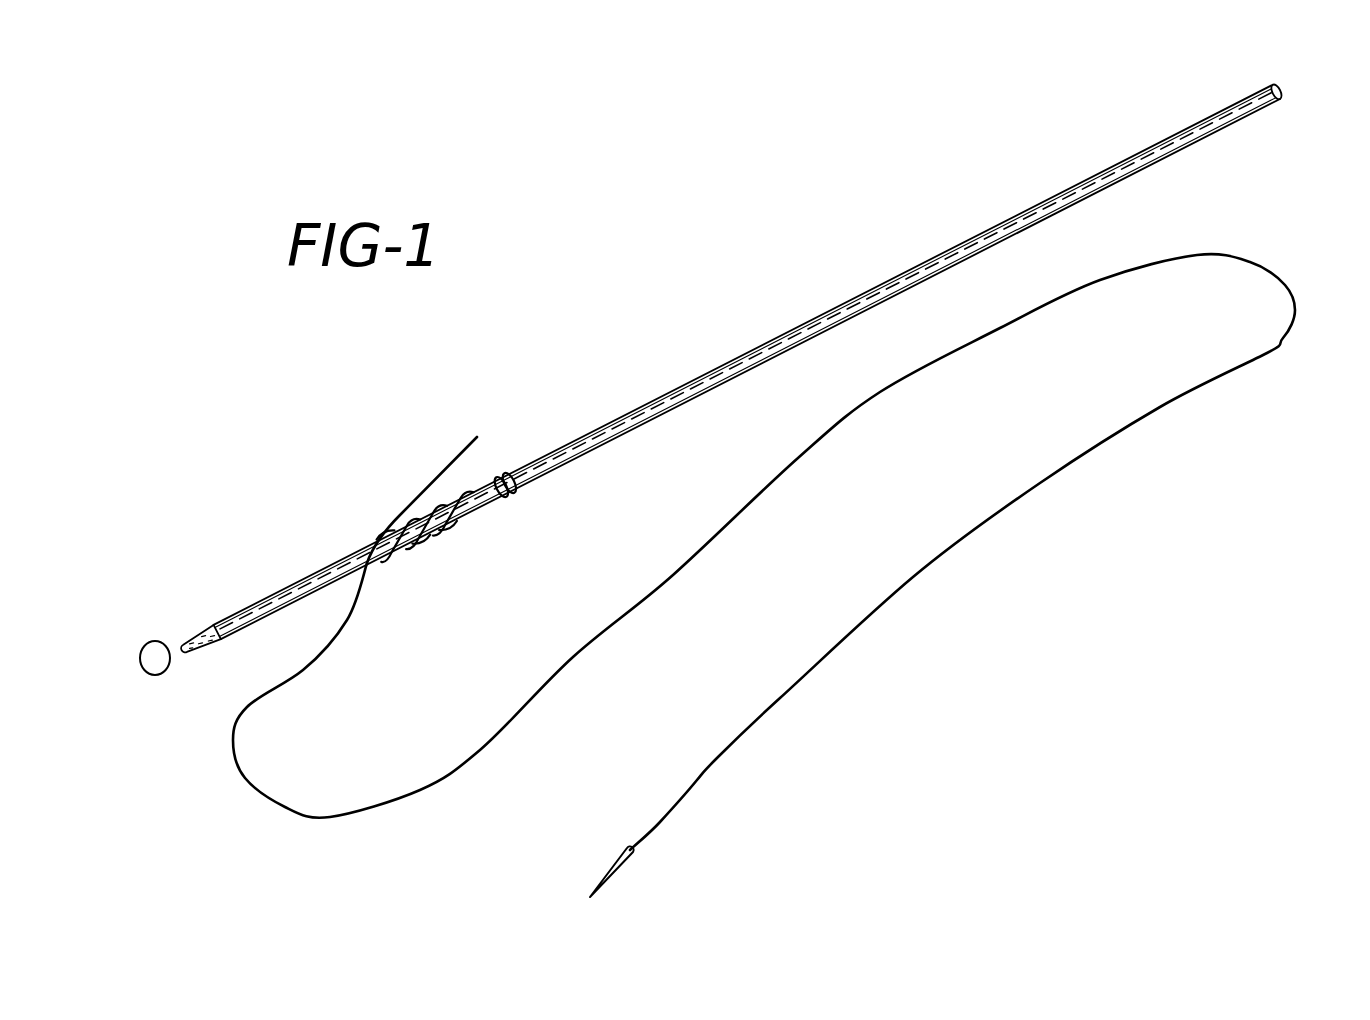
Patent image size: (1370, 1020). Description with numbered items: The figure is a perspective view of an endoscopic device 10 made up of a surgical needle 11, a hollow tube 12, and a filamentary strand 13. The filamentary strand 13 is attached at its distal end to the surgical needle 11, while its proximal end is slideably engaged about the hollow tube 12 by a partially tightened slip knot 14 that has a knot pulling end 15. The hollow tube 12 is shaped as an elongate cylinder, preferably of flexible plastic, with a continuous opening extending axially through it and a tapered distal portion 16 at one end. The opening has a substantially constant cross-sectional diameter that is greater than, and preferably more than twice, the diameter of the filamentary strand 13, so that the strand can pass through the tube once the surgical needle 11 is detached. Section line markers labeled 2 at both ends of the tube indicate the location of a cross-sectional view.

The section line 2- 2 is at (1287, 53).
The endoscopic device 10 is at (797, 290).
The surgical needle 11 is at (623, 868).
The hollow tube 12 is at (1060, 188).
The filamentary strand 13 is at (1030, 488).
The partially tightened slip knot 14 is at (446, 536).
The knot pulling end 15 is at (467, 446).
The tapered distal portion 16 is at (187, 637).